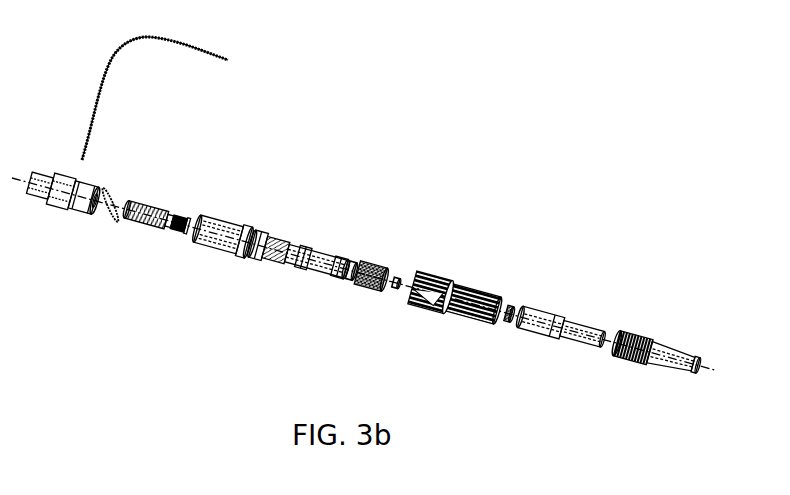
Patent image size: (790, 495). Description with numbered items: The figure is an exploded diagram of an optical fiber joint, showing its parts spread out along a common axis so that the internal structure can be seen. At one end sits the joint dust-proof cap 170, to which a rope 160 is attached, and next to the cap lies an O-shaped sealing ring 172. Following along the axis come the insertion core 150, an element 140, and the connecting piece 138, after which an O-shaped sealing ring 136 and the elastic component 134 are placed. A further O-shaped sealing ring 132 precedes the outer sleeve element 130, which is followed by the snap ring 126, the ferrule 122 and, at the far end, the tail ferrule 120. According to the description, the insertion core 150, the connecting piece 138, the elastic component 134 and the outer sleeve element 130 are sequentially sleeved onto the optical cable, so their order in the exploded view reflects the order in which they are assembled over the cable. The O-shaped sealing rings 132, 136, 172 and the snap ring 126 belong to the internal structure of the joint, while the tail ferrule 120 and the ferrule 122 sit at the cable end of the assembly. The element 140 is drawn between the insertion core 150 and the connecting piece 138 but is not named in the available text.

The tail ferrule 120 is at (642, 342).
The ferrule 122 is at (555, 321).
The snap ring 126 is at (516, 308).
The outer sleeve element 130 is at (450, 287).
The O-shaped sealing ring 132 is at (398, 278).
The elastic component 134 is at (370, 293).
The O-shaped sealing ring 136 is at (351, 263).
The connecting piece 138 is at (280, 247).
The sleeve 140 is at (227, 222).
The insertion core 150 is at (165, 207).
The rope 160 is at (94, 107).
The joint dust-proof cap 170 is at (61, 218).
The O-shaped sealing ring 172 is at (116, 189).